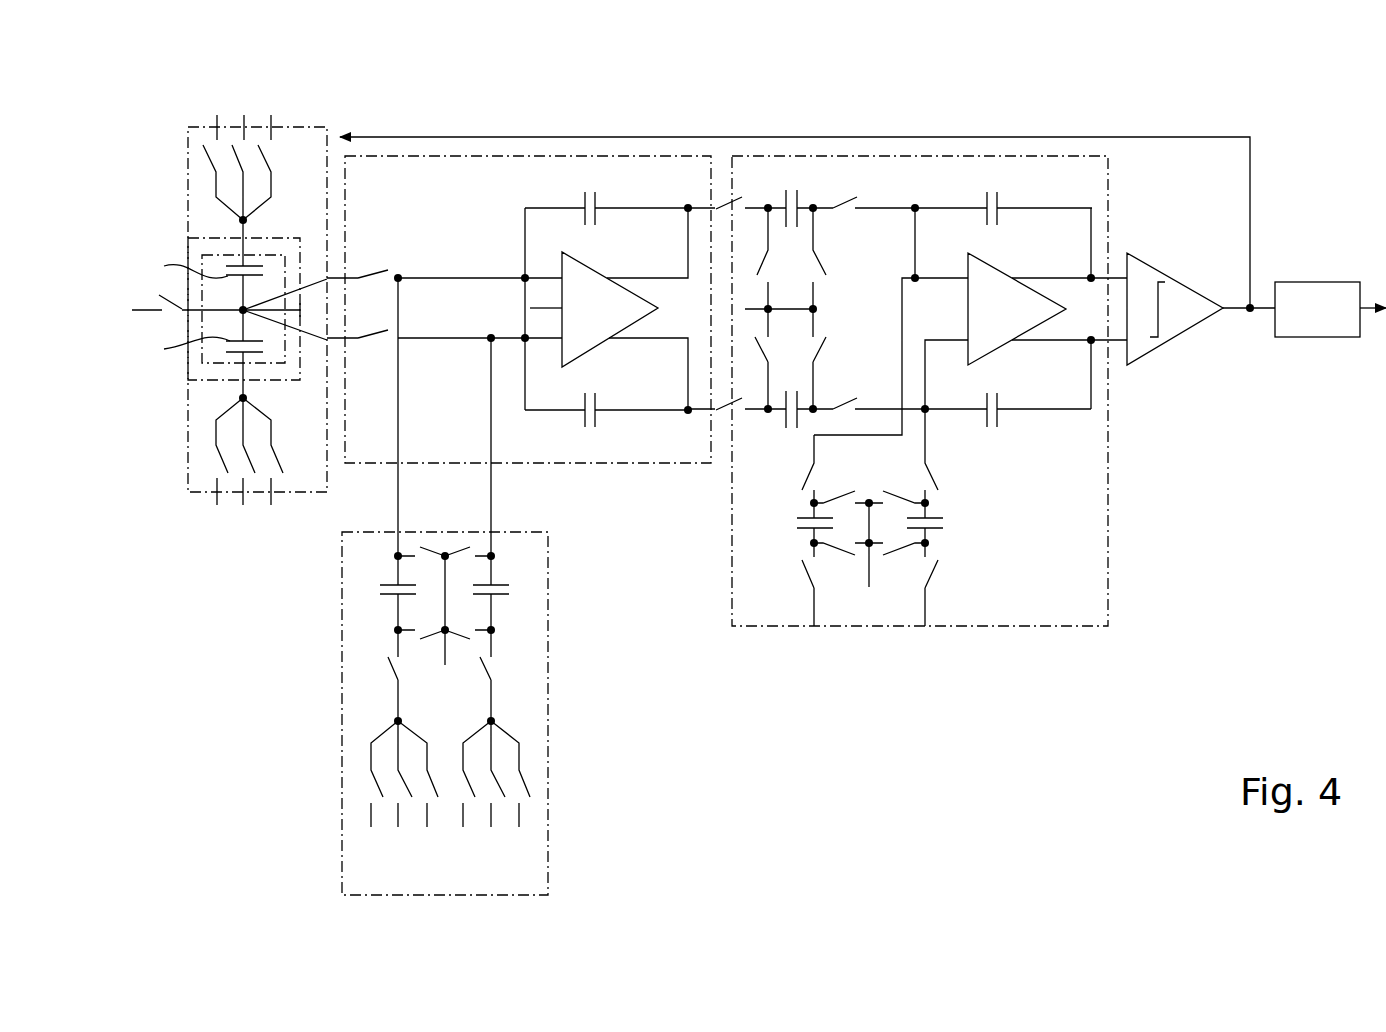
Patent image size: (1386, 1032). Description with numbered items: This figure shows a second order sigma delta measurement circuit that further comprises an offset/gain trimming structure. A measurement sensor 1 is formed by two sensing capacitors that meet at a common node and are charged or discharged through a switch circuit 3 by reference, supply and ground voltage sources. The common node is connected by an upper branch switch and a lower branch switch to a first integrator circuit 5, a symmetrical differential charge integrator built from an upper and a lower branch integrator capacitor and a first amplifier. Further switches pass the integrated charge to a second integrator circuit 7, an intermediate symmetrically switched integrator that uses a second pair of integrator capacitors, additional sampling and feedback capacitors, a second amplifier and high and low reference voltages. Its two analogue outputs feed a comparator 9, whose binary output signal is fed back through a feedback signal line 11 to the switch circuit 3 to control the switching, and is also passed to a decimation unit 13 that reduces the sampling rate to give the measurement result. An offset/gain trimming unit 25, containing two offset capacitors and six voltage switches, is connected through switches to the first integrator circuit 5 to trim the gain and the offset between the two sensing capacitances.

The measurement sensor 1 is at (190, 366).
The switch circuit 3 is at (184, 472).
The first integrator circuit 5 is at (652, 470).
The second integrator circuit 7 is at (724, 573).
The comparator 9 is at (1190, 290).
The feedback signal line 11 is at (829, 137).
The decimation unit 13 is at (1313, 338).
The offset/gain trimming unit 25 is at (334, 778).